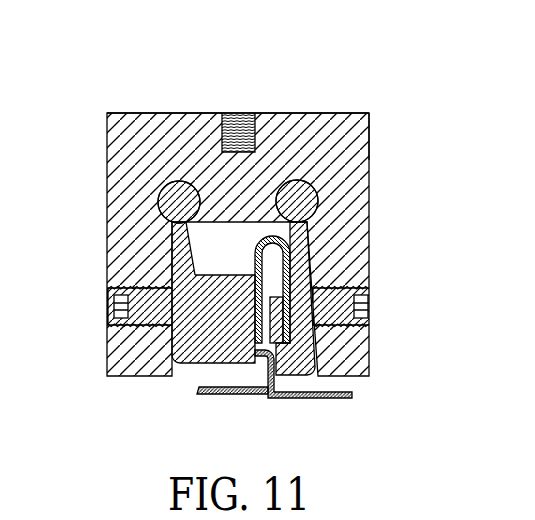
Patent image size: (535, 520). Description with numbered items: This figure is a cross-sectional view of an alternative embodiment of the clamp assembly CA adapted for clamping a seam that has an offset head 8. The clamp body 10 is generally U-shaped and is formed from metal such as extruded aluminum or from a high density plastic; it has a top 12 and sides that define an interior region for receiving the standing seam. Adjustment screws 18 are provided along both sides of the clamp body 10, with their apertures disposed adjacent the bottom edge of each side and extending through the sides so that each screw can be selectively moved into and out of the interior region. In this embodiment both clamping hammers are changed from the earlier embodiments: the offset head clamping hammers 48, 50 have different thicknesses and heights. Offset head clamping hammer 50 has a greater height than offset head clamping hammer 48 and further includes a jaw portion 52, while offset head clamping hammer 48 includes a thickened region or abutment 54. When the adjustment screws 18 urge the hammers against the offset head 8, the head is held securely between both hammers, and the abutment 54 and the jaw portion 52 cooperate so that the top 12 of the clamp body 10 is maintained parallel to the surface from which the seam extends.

The offset head 8 is at (180, 317).
The clamp body 10 is at (370, 170).
The top 12 is at (142, 113).
The adjustment screws 18 is at (133, 326).
The offset head clamping hammer 48 is at (173, 360).
The offset head clamping hammer 50 is at (313, 380).
The jaw portion 52 is at (283, 380).
The abutment 54 is at (213, 322).
The clamp assembly CA is at (375, 101).